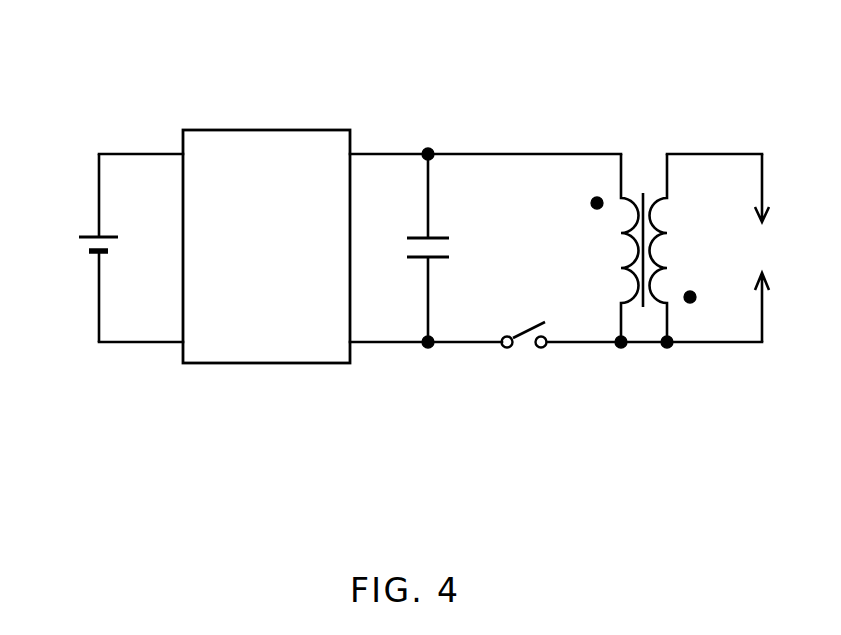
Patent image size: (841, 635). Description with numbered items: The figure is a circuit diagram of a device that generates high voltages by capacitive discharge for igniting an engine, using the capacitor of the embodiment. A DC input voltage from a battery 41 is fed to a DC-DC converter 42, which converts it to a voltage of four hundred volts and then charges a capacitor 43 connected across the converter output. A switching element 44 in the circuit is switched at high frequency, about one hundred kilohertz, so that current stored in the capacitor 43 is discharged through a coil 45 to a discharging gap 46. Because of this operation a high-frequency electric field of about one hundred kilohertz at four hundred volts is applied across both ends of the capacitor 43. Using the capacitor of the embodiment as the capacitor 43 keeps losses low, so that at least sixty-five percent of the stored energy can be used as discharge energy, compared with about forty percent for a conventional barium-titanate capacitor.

The battery 41 is at (85, 230).
The DC-DC converter 42 is at (313, 128).
The capacitor 43 is at (452, 247).
The switching element 44 is at (523, 353).
The coil 45 is at (645, 180).
The discharging gap 46 is at (762, 247).